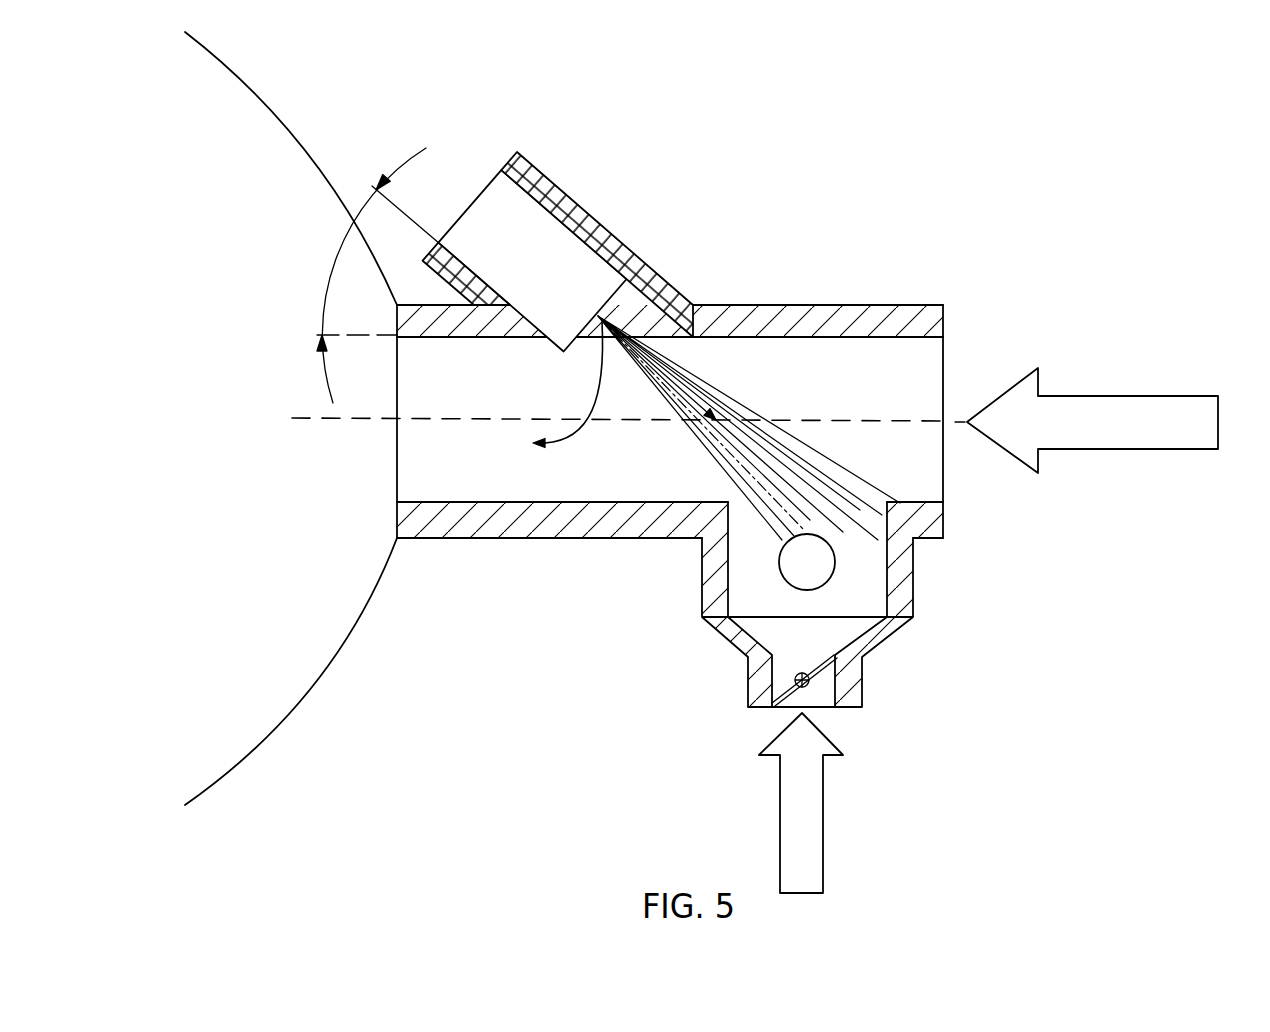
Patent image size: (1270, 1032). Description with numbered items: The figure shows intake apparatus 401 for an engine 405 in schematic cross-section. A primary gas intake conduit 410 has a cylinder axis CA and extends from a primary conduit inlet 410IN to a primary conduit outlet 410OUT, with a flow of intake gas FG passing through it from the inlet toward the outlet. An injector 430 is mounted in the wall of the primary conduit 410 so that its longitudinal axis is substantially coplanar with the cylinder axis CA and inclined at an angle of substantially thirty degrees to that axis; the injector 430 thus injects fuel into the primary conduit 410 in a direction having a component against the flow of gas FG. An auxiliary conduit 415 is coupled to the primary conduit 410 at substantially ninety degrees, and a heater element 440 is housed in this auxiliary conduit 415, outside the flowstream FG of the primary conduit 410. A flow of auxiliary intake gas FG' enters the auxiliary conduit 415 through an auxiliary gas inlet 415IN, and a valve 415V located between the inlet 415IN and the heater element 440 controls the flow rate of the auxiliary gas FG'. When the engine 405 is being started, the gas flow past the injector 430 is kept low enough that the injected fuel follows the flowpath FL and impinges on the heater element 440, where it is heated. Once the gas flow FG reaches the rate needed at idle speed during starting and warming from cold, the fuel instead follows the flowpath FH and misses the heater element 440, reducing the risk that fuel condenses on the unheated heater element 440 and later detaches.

The intake apparatus 401 is at (725, 509).
The engine 405 is at (287, 205).
The primary gas intake conduit 410 is at (543, 520).
The primary conduit inlet 410IN is at (974, 364).
The primary conduit outlet 410OUT is at (382, 442).
The auxiliary conduit 415 is at (712, 568).
The auxiliary gas inlet 415IN is at (831, 722).
The valve 415V is at (760, 688).
The injector 430 is at (528, 225).
The heater element 440 is at (835, 560).
The cylinder axis CA is at (427, 420).
The flow of intake gas FG is at (1086, 406).
The flow of auxiliary intake gas FG' is at (827, 803).
The fuel flowpath at idle FH is at (572, 435).
The fuel flowpath during starting FL is at (680, 376).